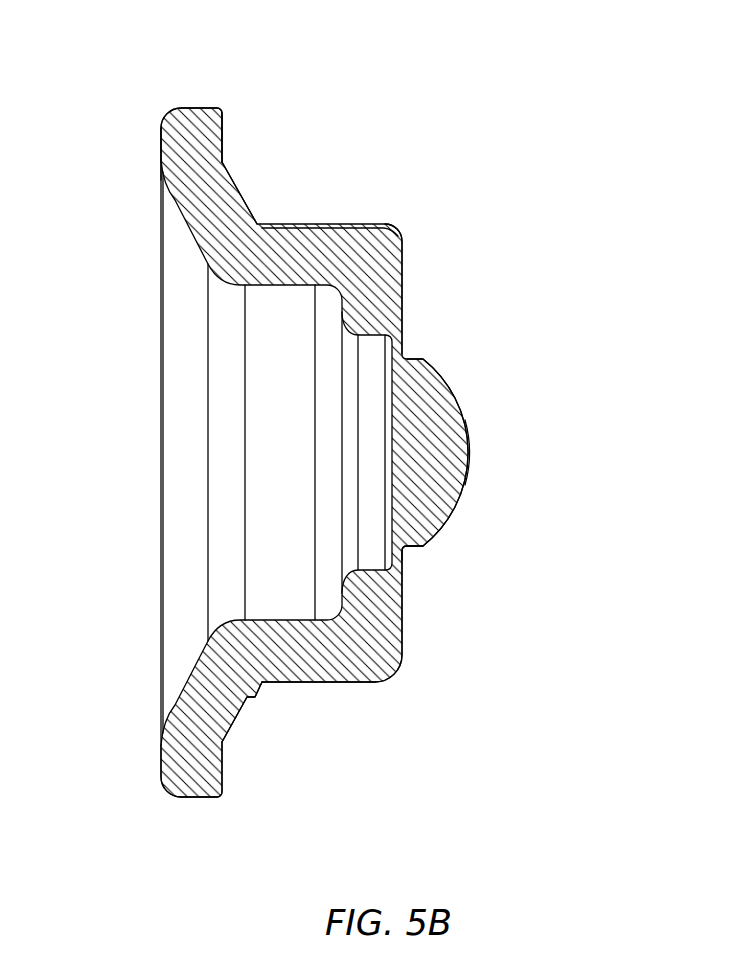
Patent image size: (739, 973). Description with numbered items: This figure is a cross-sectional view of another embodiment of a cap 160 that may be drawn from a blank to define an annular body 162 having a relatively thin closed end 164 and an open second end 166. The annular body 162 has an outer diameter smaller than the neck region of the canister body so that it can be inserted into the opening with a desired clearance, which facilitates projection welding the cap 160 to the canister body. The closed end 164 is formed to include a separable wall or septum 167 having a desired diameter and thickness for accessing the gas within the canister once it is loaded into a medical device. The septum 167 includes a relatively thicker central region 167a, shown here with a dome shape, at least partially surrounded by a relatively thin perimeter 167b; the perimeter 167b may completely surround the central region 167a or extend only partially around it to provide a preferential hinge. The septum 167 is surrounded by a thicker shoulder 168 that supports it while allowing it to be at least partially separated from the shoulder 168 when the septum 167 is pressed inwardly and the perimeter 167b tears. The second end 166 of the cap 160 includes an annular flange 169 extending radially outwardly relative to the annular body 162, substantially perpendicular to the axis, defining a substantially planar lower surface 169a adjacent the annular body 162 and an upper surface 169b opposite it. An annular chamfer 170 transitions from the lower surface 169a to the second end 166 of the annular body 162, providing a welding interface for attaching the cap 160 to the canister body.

The cap 160 is at (490, 220).
The annular body 162 is at (323, 682).
The closed end 164 is at (402, 622).
The open second end 166 is at (257, 695).
The septum 167 is at (470, 442).
The central region 167a is at (470, 473).
The perimeter 167b is at (402, 555).
The shoulder 168 is at (402, 286).
The annular flange 169 is at (197, 108).
The lower surface 169a is at (222, 127).
The upper surface 169b is at (162, 145).
The annular chamfer 170 is at (240, 193).